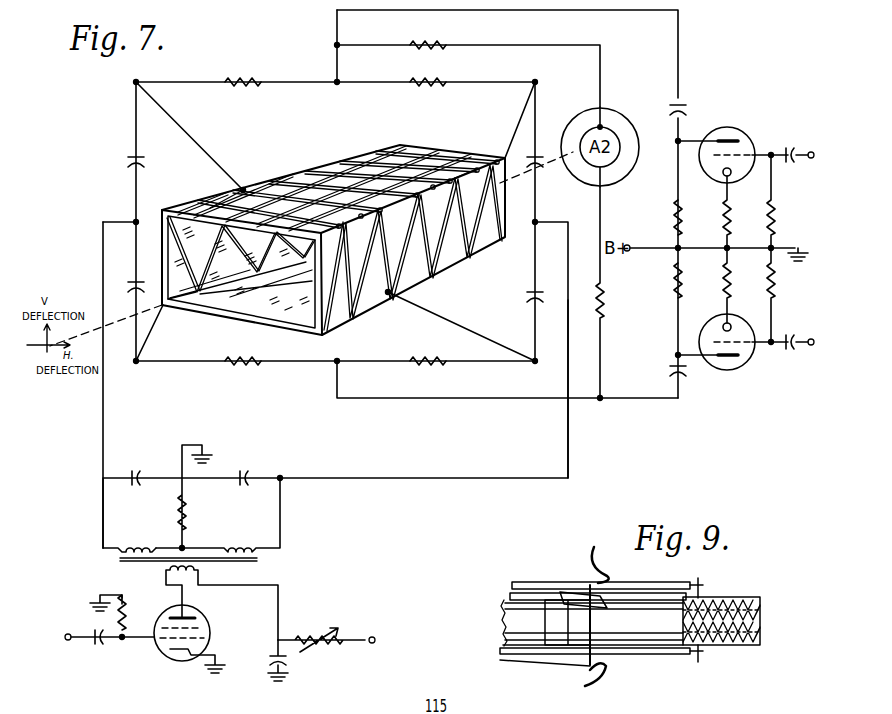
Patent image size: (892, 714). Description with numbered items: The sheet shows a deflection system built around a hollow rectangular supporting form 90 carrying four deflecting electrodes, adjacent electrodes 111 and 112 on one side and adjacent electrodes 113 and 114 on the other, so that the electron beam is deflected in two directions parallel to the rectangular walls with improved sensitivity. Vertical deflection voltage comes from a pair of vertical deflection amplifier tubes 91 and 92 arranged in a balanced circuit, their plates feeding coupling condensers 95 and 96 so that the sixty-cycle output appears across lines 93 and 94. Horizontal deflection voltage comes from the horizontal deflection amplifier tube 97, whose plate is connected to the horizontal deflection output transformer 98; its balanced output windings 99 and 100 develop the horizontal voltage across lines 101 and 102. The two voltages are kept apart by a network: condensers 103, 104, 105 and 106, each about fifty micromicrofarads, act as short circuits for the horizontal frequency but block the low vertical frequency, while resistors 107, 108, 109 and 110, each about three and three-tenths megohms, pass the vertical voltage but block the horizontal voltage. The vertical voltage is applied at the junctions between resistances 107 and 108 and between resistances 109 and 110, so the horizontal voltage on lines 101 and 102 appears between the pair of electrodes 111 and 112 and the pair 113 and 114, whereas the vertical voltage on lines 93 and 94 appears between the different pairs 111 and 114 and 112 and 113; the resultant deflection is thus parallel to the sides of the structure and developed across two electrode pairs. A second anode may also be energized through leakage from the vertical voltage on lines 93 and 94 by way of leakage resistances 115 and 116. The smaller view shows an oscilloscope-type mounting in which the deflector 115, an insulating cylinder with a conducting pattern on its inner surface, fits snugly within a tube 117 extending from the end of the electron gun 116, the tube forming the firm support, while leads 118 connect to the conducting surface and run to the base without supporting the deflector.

In FIG. 7, the hollow rectangular supporting form 90 is at (307, 172).
In FIG. 7, the vertical deflection amplifier tube 91 is at (735, 371).
In FIG. 7, the vertical deflection amplifier tube 92 is at (746, 140).
In FIG. 7, the line 93 is at (498, 399).
In FIG. 7, the line 94 is at (572, 11).
In FIG. 7, the coupling condenser 95 is at (683, 381).
In FIG. 7, the coupling condenser 96 is at (681, 104).
In FIG. 7, the horizontal deflection amplifier tube 97 is at (207, 631).
In FIG. 7, the horizontal deflection output transformer 98 is at (207, 559).
In FIG. 7, the balanced output winding 99 is at (246, 547).
In FIG. 7, the balanced output winding 100 is at (138, 548).
In FIG. 7, the line 101 is at (569, 435).
In FIG. 7, the line 102 is at (103, 425).
In FIG. 7, the condenser 103 is at (537, 153).
In FIG. 7, the condenser 104 is at (528, 297).
In FIG. 7, the condenser 105 is at (130, 283).
In FIG. 7, the condenser 106 is at (131, 159).
In FIG. 7, the resistor 107 is at (246, 363).
In FIG. 7, the resistor 108 is at (425, 363).
In FIG. 7, the resistor 109 is at (435, 84).
In FIG. 7, the resistor 110 is at (266, 60).
In FIG. 7, the deflecting electrode 111 is at (245, 186).
In FIG. 7, the deflecting electrode 112 is at (177, 286).
In FIG. 7, the deflecting electrode 113 is at (389, 295).
In FIG. 7, the deflecting electrode 114 is at (478, 163).
In FIG. 7, the leakage resistance / deflector 115 is at (468, 34).
In FIG. 9, the leakage resistance / deflector 115 is at (752, 598).
In FIG. 7, the leakage resistance / electron gun 116 is at (646, 307).
In FIG. 9, the leakage resistance / electron gun 116 is at (550, 612).
In FIG. 9, the tube 117 is at (640, 600).
In FIG. 9, the leads 118 is at (718, 569).